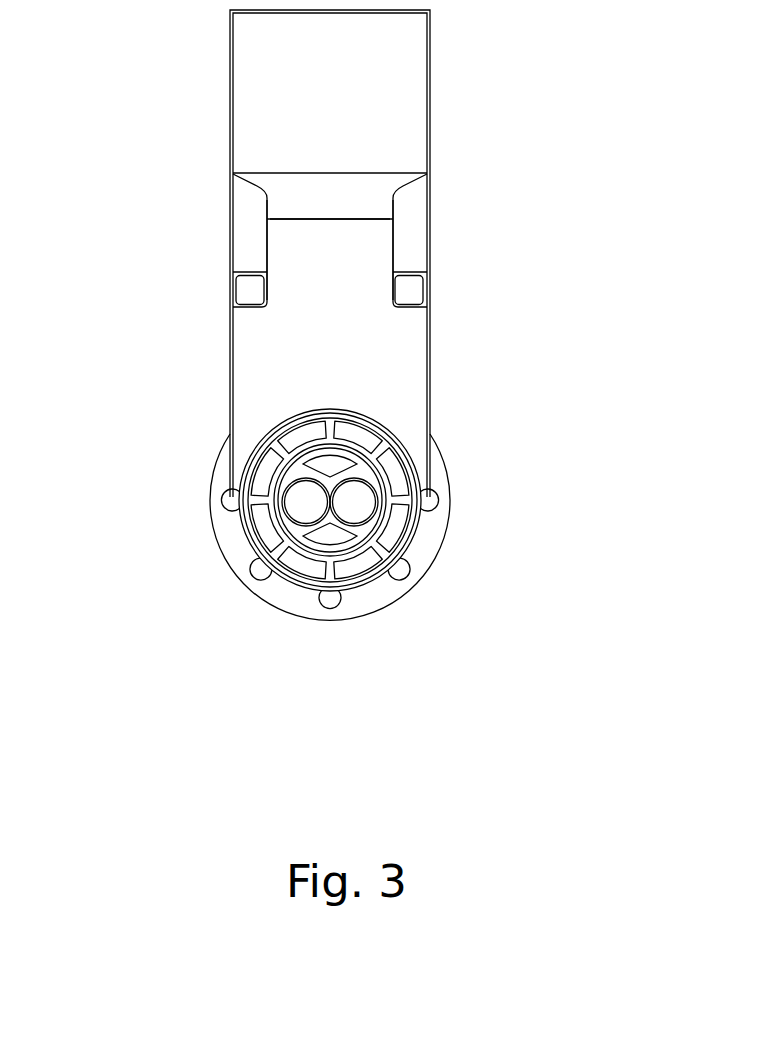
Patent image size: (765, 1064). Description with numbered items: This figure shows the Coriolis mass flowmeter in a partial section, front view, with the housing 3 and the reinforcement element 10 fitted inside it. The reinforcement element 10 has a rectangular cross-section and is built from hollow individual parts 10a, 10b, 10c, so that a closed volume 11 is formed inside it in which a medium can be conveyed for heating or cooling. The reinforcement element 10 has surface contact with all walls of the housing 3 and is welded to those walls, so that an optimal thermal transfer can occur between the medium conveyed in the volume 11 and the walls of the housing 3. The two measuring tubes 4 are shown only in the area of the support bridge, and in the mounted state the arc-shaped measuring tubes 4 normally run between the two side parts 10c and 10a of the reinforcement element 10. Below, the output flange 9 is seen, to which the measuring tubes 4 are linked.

The housing 3 is at (430, 355).
The measuring tubes 4 is at (305, 503).
The output flange 9 is at (422, 548).
The reinforcement element 10 is at (284, 182).
The individual part 10a is at (412, 216).
The individual part 10b is at (352, 182).
The individual part 10c is at (253, 240).
The volume 11 is at (426, 278).